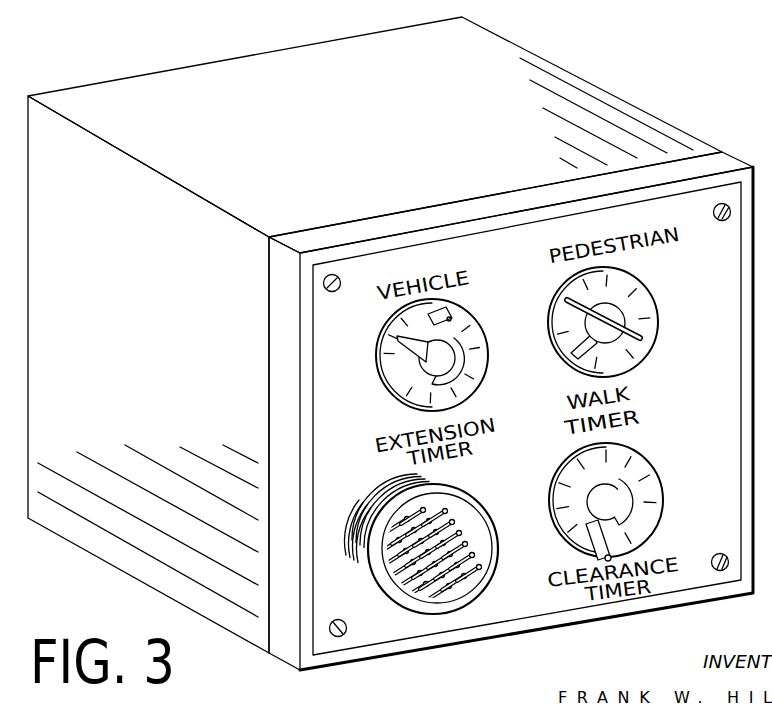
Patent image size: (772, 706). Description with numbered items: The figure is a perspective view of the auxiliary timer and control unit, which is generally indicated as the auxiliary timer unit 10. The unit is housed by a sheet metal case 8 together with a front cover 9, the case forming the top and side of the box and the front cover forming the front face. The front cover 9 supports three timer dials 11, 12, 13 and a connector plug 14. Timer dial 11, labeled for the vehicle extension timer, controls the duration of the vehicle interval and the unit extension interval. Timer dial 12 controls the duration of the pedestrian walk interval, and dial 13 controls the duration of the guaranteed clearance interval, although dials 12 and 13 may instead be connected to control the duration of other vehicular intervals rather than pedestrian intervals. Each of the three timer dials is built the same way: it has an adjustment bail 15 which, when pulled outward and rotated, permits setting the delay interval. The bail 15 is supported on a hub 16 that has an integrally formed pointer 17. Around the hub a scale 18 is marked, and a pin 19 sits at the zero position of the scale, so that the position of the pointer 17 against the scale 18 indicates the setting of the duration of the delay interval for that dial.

The sheet metal case 8 is at (583, 79).
The front cover 9 is at (733, 153).
The auxiliary timer unit 10 is at (690, 103).
The timer dial 11 is at (429, 358).
The timer dial 12 is at (649, 286).
The timer dial 13 is at (648, 462).
The connector plug 14 is at (476, 500).
The adjustment bail 15 is at (463, 387).
The hub 16 is at (407, 378).
The pointer 17 is at (397, 340).
The scale 18 is at (383, 381).
The pin 19 is at (452, 310).